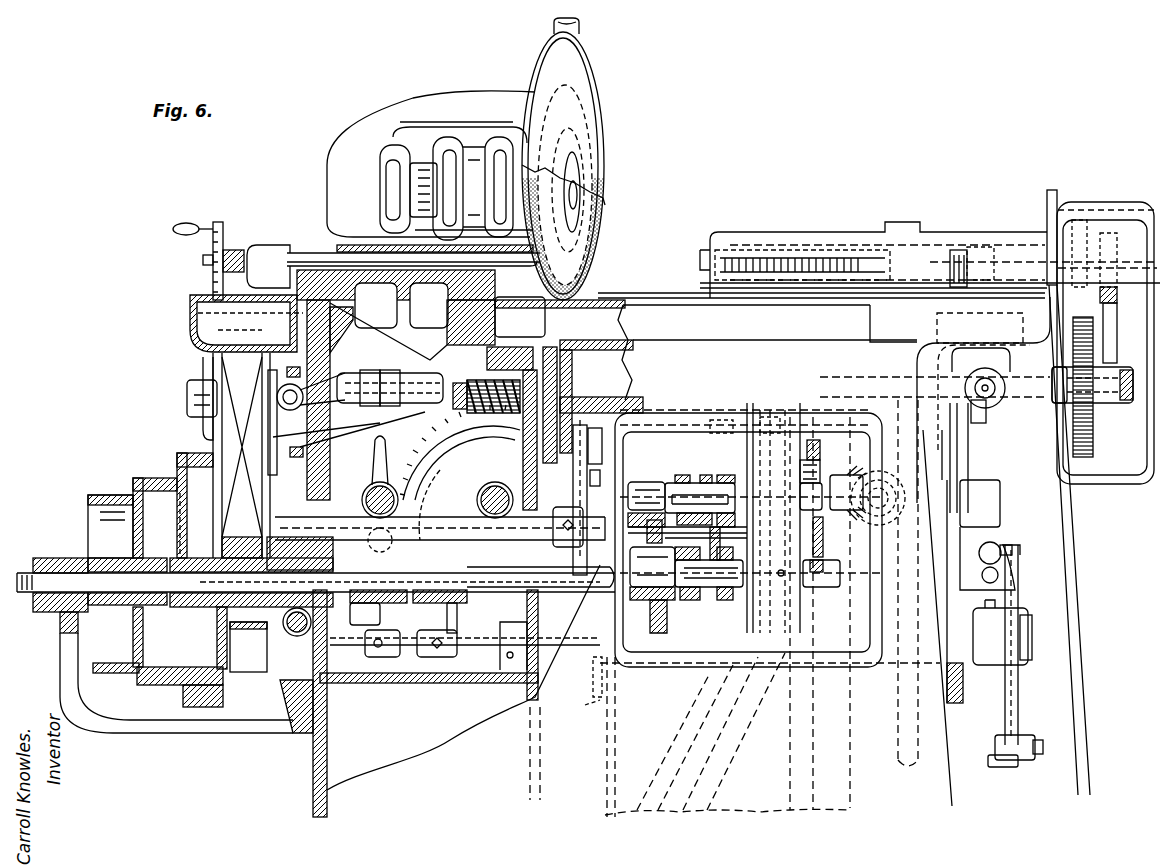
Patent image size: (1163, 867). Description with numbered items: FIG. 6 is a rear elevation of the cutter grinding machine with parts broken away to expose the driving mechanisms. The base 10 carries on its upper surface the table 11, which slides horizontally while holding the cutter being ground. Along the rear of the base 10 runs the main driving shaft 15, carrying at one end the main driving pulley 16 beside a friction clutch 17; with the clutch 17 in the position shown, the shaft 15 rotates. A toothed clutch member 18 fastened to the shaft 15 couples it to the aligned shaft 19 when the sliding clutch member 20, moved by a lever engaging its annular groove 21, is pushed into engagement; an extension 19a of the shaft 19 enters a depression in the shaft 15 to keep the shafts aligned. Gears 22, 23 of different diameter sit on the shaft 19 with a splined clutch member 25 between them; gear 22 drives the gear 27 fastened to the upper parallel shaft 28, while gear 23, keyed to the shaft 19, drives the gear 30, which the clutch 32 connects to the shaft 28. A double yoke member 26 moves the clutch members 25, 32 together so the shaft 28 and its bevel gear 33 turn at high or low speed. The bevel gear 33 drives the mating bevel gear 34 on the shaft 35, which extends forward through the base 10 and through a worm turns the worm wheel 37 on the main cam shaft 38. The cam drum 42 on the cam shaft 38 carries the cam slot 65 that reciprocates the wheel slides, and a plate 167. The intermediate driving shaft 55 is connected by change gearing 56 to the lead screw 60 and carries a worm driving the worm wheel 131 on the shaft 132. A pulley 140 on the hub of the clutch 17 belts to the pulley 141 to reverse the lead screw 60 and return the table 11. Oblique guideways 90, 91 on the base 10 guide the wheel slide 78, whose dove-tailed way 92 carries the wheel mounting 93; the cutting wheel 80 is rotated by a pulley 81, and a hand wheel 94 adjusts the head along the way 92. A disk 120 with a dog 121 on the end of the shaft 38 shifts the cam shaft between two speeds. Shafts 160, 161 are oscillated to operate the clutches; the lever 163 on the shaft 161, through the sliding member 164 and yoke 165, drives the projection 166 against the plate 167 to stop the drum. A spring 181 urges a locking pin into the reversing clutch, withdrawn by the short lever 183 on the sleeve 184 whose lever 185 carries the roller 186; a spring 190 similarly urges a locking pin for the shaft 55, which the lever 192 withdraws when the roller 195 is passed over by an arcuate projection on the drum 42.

The base 10 is at (312, 775).
The table 11 is at (865, 232).
The main driving shaft 15 is at (62, 570).
The main driving pulley 16 is at (95, 498).
The friction clutch 17 is at (175, 498).
The toothed clutch member 18 is at (400, 603).
The shaft 19 is at (575, 583).
The extension 19a is at (368, 618).
The clutch member 20 is at (460, 603).
The annular groove 21 is at (465, 545).
The gear 22 is at (667, 630).
The gear 23 is at (815, 587).
The clutch member 25 is at (710, 600).
The double yoke member 26 is at (712, 543).
The gear 27 is at (648, 484).
The shaft 28 is at (685, 487).
The gear 30 is at (823, 445).
The clutch 32 is at (718, 478).
The bevel gear 33 is at (858, 478).
The bevel gear 34 is at (880, 455).
The shaft 35 is at (905, 480).
The worm wheel 37 is at (895, 733).
The main cam shaft 38 is at (1032, 635).
The cam drum 42 is at (610, 780).
The intermediate driving shaft 55 is at (1133, 392).
The change gearing 56 is at (1102, 233).
The lead screw 60 is at (715, 258).
The cam slot 65 is at (690, 720).
The wheel slide 78 is at (305, 255).
The cutting wheel 80 is at (603, 236).
The pulley 81 is at (470, 148).
The guideway 90 is at (497, 315).
The guideway 91 is at (345, 330).
The dove-tailed way 92 is at (320, 253).
The wheel mounting 93 is at (345, 150).
The hand wheel 94 is at (205, 250).
The disk 120 is at (1020, 695).
The dog 121 is at (1000, 765).
The worm wheel 131 is at (445, 448).
The shaft 132 is at (495, 482).
The pulley 140 is at (245, 640).
The pulley 141 is at (213, 370).
The shaft 160 is at (370, 490).
The shaft 161 is at (362, 519).
The lever 163 is at (372, 650).
The sliding member 164 is at (412, 660).
The yoke 165 is at (440, 660).
The projection 166 is at (595, 678).
The plate 167 is at (582, 713).
The spring 181 is at (978, 380).
The short lever 183 is at (322, 440).
The sleeve 184 is at (428, 505).
The lever 185 is at (568, 490).
The roller 186 is at (605, 440).
The spring 190 is at (345, 362).
The lever 192 is at (970, 443).
The roller 195 is at (602, 476).